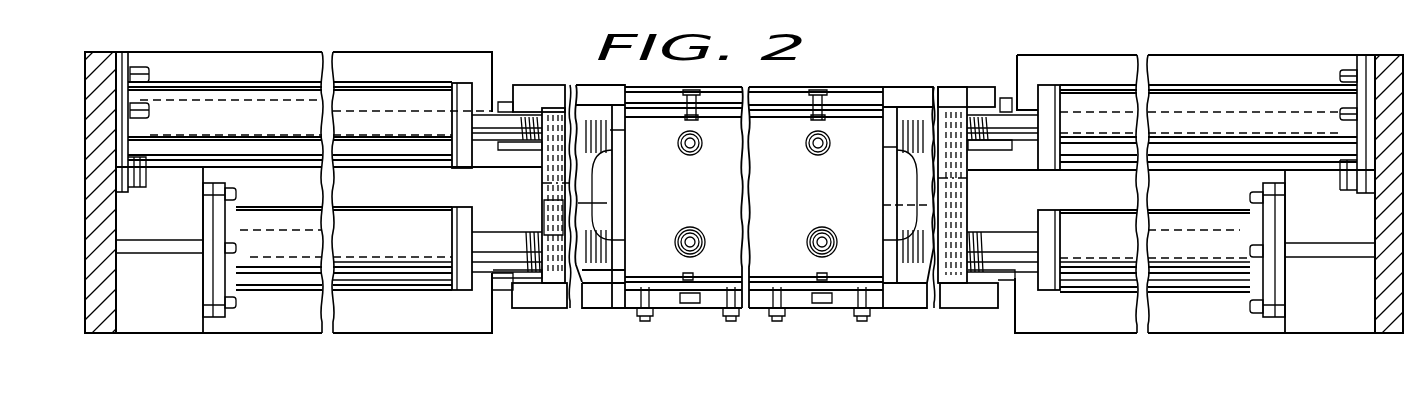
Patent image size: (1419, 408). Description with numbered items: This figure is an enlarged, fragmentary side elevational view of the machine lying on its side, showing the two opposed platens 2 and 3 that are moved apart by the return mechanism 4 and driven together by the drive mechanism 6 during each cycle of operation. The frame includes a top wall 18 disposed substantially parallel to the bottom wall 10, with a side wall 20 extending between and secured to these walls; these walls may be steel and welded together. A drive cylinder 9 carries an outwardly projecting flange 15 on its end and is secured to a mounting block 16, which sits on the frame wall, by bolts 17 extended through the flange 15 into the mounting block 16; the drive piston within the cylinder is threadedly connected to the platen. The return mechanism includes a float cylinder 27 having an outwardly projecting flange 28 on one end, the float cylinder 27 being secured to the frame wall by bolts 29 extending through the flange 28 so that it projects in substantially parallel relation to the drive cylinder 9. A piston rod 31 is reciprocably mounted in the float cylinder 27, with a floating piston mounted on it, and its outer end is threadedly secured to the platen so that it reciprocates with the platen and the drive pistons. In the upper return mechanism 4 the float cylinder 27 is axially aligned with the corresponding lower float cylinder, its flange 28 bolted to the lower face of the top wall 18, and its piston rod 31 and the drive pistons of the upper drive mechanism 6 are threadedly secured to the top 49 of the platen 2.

The platen 2 is at (553, 173).
The platen 3 is at (950, 177).
The return mechanism 4 is at (295, 68).
The drive mechanism 6 is at (275, 290).
The drive cylinder 9 is at (400, 283).
The bottom wall 10 is at (1383, 323).
The flange 15 is at (216, 316).
The mounting block 16 is at (150, 297).
The bolt 17 is at (233, 310).
The top wall 18 is at (97, 313).
The side wall 20 is at (853, 130).
The float cylinder 27 is at (218, 70).
The flange 28 is at (127, 54).
The bolt 29 is at (140, 68).
The piston rod 31 is at (492, 130).
The top of platen 49 is at (552, 218).